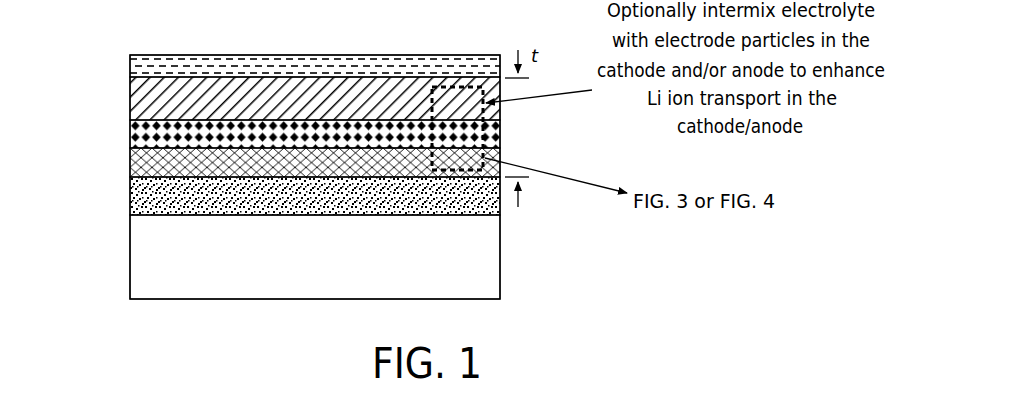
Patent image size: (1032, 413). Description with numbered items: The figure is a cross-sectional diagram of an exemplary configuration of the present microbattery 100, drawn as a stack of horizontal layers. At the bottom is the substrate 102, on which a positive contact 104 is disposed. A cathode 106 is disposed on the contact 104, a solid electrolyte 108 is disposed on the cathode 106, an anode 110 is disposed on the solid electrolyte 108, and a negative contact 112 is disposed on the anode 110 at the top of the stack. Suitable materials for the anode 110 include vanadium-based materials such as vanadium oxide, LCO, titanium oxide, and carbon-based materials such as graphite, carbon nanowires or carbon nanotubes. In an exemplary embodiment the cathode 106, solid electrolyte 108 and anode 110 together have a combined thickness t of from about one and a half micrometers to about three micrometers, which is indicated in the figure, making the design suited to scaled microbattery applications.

The microbattery 100 is at (74, 33).
The substrate 102 is at (130, 247).
The positive contact 104 is at (130, 185).
The cathode 106 is at (130, 154).
The solid electrolyte 108 is at (130, 122).
The anode 110 is at (130, 90).
The negative contact 112 is at (130, 58).